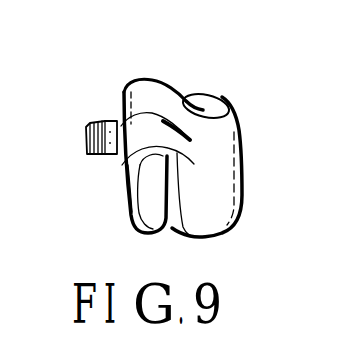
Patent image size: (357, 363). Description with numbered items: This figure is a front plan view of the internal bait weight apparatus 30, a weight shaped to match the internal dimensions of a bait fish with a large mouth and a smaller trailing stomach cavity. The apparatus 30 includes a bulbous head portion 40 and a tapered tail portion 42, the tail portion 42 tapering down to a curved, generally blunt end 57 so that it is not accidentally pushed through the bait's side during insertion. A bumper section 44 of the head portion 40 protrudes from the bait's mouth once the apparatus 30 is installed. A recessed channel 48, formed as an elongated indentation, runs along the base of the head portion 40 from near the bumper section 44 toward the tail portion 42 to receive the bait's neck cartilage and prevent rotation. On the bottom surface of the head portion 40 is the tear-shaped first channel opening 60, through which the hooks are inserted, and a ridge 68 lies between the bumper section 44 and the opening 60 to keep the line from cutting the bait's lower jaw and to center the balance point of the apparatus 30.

The internal bait weight apparatus 30 is at (174, 157).
The bulbous head portion 40 is at (241, 156).
The tapered tail portion 42 is at (81, 124).
The bumper section 44 is at (144, 82).
The recessed channel 48 is at (178, 236).
The blunt end 57 is at (86, 147).
The first channel opening 60 is at (152, 202).
The ridge 68 is at (133, 162).